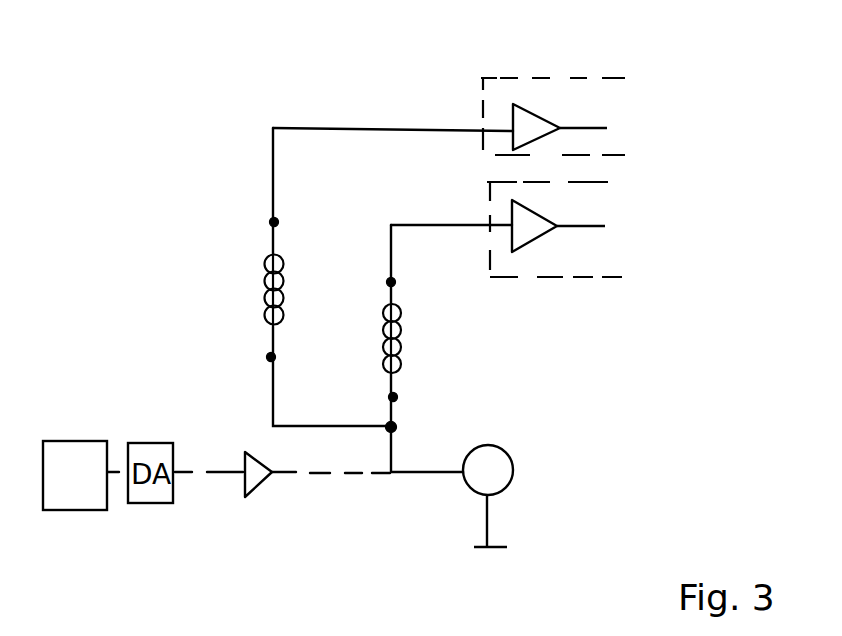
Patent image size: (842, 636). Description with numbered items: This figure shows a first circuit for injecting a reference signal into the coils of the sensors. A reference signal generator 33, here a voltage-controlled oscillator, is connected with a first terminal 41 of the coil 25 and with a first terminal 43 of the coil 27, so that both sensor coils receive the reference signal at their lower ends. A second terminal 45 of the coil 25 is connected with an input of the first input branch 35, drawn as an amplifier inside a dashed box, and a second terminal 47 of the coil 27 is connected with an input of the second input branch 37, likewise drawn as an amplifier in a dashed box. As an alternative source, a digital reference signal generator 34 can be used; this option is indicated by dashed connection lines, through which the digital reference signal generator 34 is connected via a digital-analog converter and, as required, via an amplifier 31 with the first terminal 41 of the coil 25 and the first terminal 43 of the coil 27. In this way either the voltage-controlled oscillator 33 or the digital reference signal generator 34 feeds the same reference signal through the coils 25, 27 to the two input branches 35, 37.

The coil 25 is at (268, 292).
The coil 27 is at (412, 352).
The amplifier 31 is at (262, 478).
The reference signal generator 33 is at (517, 474).
The digital reference signal generator 34 is at (75, 475).
The first input branch 35 is at (516, 78).
The second input branch 37 is at (508, 279).
The first terminal of the coil 25 41 is at (243, 364).
The first terminal of the coil 27 43 is at (421, 407).
The second terminal of coil 25 45 is at (249, 225).
The second terminal of the coil 27 47 is at (369, 281).